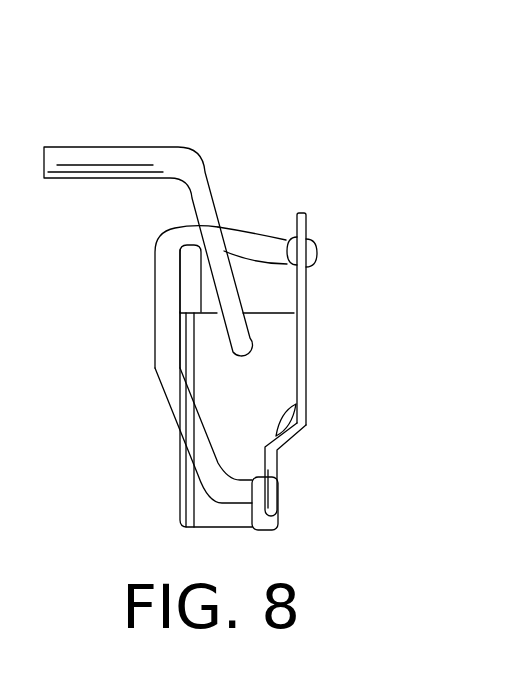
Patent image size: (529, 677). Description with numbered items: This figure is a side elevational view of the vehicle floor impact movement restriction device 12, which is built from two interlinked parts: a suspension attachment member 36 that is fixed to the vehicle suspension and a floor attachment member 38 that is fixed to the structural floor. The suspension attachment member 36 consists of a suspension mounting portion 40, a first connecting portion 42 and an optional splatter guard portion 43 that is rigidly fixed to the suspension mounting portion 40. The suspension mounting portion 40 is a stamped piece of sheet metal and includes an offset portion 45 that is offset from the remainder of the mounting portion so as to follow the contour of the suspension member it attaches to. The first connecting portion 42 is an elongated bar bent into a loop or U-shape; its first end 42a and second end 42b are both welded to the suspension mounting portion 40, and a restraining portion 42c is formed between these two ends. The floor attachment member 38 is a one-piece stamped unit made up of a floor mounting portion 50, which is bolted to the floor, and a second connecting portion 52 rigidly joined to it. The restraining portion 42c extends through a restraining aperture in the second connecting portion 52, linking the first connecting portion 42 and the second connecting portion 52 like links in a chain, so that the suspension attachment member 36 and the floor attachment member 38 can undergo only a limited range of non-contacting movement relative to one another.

The vehicle floor impact movement restriction device 12 is at (209, 288).
The suspension attachment member 36 is at (326, 421).
The floor attachment member 38 is at (141, 208).
The suspension mounting portion 40 is at (337, 296).
The first connecting portion 42 is at (198, 392).
The first end 42a is at (289, 235).
The second end 42b is at (304, 517).
The restraining portion 42c is at (186, 236).
The splatter guard portion 43 is at (237, 400).
The offset portion 45 is at (268, 458).
The floor mounting portion 50 is at (119, 160).
The second connecting portion 52 is at (215, 212).